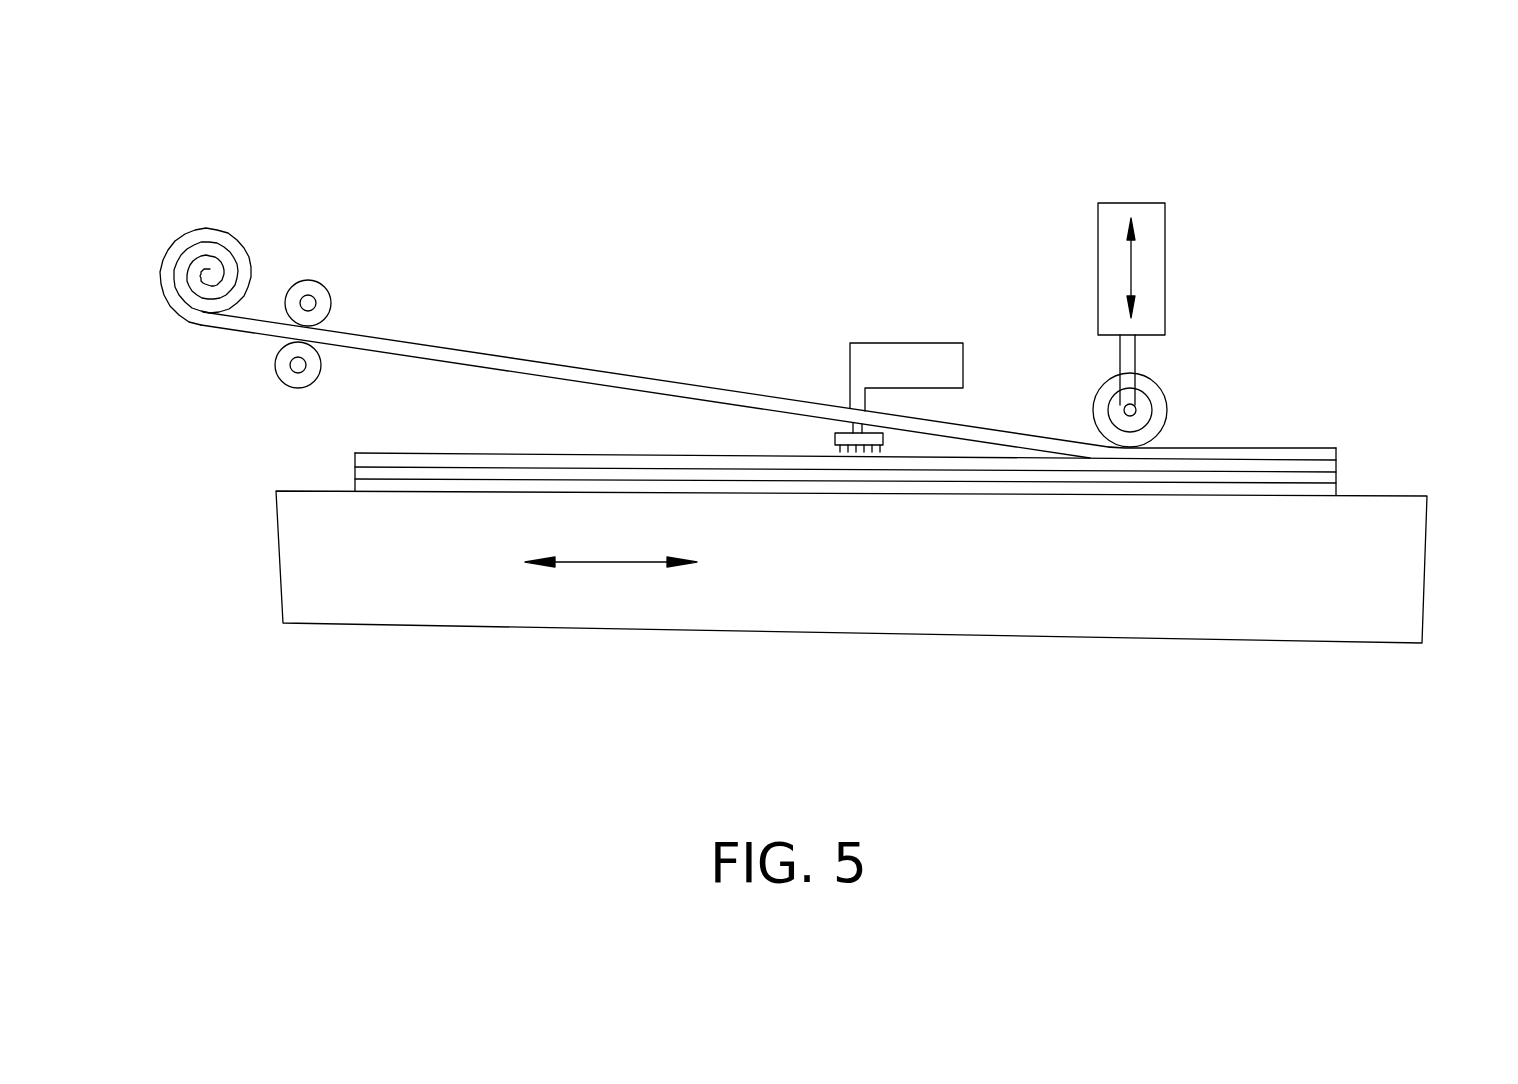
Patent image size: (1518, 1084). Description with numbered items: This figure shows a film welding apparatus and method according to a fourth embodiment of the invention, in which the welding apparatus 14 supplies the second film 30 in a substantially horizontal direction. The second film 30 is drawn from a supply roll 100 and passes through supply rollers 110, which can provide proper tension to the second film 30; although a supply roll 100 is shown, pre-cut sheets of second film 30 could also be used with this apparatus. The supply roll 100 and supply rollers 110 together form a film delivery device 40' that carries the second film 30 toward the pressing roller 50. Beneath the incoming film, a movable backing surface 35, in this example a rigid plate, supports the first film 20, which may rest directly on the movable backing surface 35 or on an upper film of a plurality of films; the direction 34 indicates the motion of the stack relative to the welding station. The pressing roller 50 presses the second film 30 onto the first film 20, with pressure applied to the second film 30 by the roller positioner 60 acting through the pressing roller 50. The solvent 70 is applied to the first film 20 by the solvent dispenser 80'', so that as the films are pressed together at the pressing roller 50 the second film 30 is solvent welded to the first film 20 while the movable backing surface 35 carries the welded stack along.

The welding apparatus 14 is at (900, 144).
The first film 20 is at (353, 453).
The second film 30 is at (412, 340).
The layup direction 34 is at (322, 469).
The movable backing surface 35 is at (1425, 570).
The feed assembly 40' is at (500, 183).
The pressing roller 50 is at (1168, 407).
The roller positioner 60 is at (1165, 239).
The solvent 70 is at (895, 367).
The solvent dispenser 80'' is at (823, 369).
The supply roll 100 is at (196, 233).
The supply rollers 110 is at (308, 280).